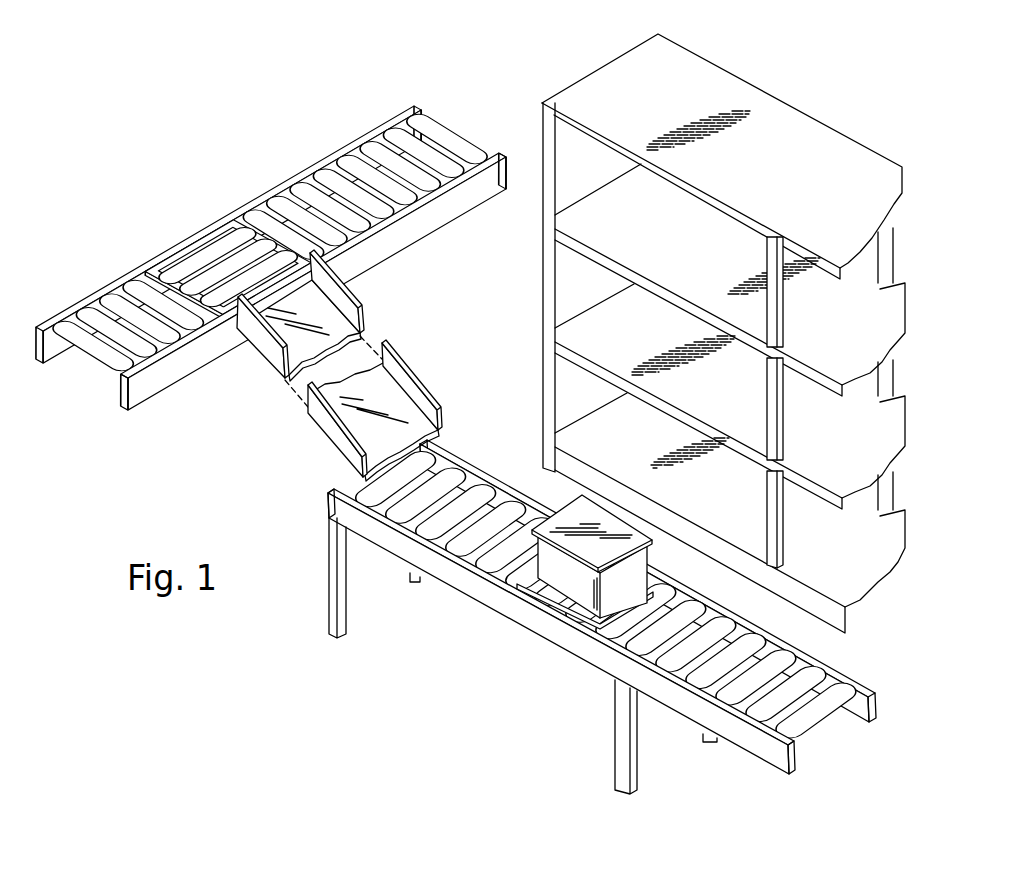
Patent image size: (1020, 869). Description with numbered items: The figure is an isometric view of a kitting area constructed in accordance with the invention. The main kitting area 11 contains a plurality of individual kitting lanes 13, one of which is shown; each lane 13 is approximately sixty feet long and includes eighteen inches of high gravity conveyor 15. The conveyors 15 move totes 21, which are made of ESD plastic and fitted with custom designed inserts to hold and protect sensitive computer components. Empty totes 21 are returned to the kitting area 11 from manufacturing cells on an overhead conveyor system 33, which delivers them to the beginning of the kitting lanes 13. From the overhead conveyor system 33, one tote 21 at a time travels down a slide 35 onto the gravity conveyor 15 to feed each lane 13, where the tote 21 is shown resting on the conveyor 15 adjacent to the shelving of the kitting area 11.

The main kitting area 11 is at (223, 130).
The kitting lane 13 is at (497, 645).
The gravity conveyor 15 is at (443, 470).
The tote 21 is at (573, 573).
The overhead conveyor system 33 is at (182, 247).
The slide 35 is at (387, 402).